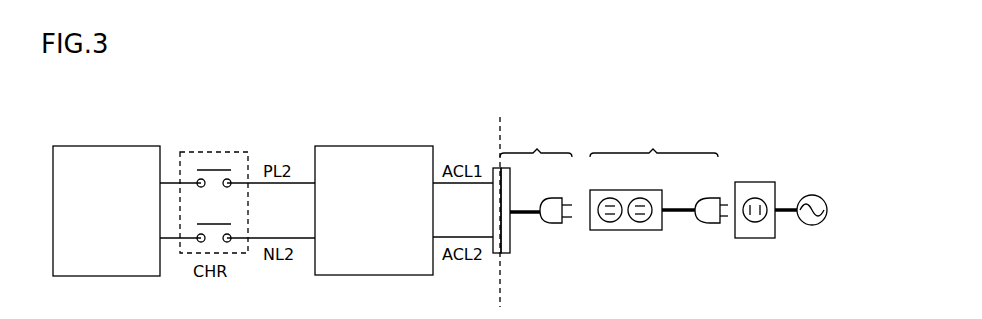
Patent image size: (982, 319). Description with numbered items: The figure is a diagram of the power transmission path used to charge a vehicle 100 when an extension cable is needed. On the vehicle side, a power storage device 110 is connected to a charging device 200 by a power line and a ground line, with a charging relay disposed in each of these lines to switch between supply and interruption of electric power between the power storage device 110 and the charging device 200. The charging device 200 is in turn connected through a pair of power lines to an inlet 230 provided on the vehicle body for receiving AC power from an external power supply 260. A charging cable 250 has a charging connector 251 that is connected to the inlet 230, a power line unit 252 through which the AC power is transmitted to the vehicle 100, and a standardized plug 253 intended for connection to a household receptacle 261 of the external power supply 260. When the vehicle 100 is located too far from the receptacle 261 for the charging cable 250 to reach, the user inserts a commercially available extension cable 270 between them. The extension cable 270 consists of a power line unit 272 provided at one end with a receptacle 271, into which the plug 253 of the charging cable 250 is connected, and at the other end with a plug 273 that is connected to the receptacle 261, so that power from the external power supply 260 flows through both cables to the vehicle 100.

The vehicle 100 is at (410, 102).
The power storage device 110 is at (122, 146).
The charging device 200 is at (402, 146).
The inlet 230 is at (497, 253).
The charging cable 250 is at (536, 141).
The charging connector 251 is at (505, 253).
The power line unit 252 is at (527, 208).
The plug 253 is at (553, 225).
The external power supply 260 is at (807, 193).
The receptacle 261 is at (757, 238).
The extension cable 270 is at (654, 142).
The receptacle 271 is at (627, 230).
The power line unit 272 is at (677, 205).
The plug 273 is at (713, 224).